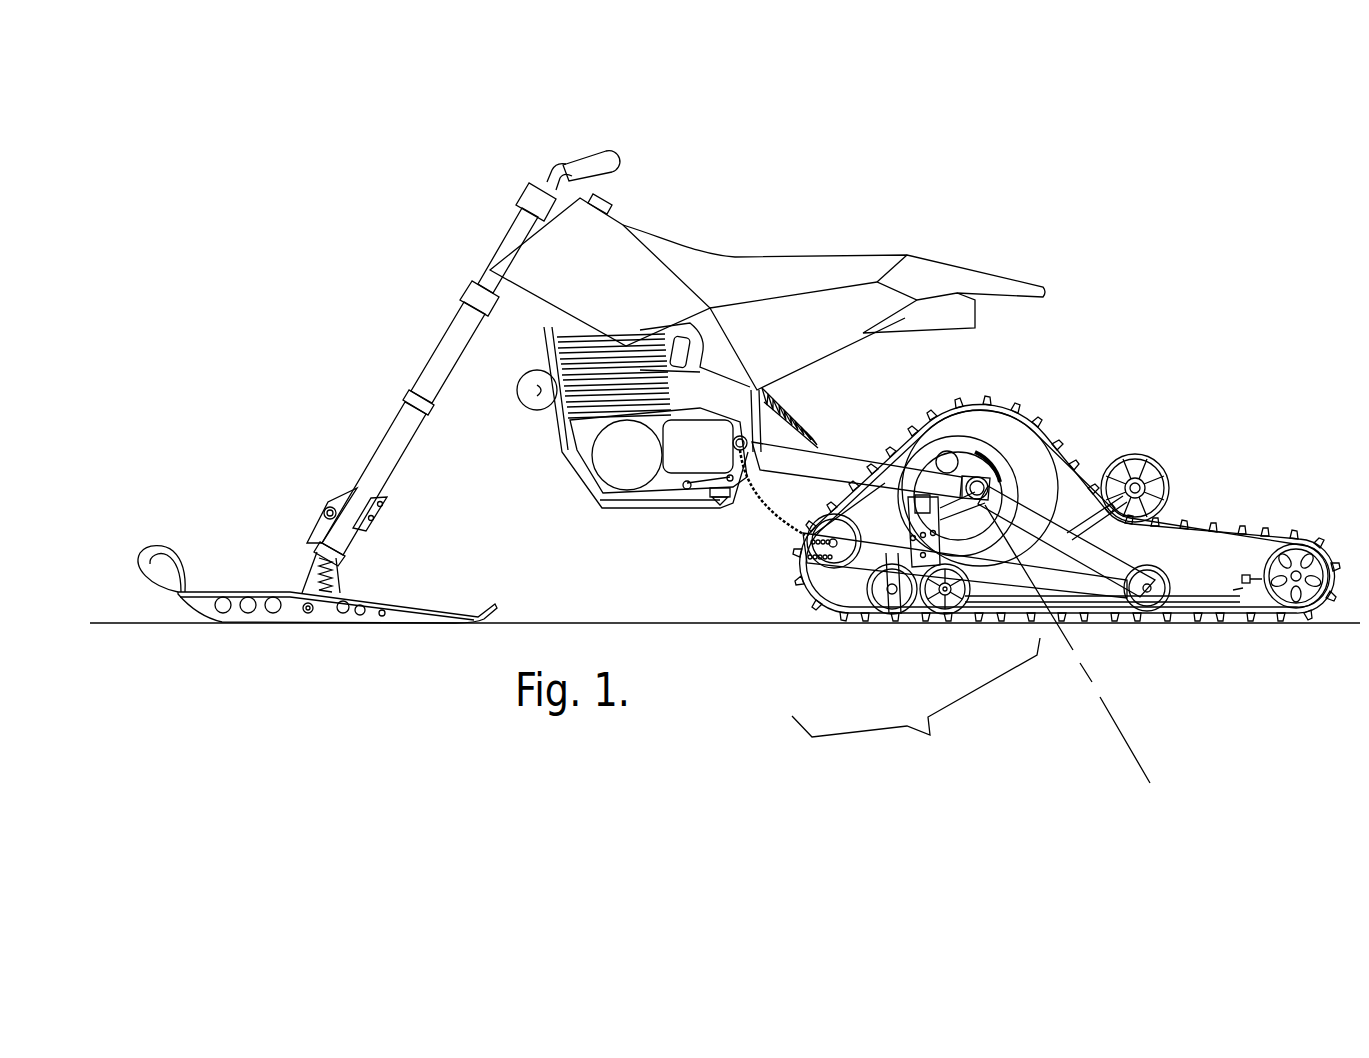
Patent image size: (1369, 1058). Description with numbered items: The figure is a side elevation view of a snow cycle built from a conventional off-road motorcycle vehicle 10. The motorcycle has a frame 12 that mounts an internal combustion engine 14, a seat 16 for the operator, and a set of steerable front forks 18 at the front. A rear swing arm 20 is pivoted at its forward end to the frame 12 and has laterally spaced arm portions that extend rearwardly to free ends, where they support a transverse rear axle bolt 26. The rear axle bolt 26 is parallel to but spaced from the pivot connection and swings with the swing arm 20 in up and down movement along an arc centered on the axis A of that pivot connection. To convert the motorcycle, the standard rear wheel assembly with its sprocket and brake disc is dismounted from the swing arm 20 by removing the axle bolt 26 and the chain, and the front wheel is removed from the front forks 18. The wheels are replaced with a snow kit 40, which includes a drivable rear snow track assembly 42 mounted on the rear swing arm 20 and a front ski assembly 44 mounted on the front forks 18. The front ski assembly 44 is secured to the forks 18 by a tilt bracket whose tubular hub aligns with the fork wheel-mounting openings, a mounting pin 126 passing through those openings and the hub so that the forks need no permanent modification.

The off-road motorcycle vehicle 10 is at (484, 212).
The frame 12 is at (656, 524).
The internal combustion engine 14 is at (603, 477).
The seat 16 is at (750, 268).
The front forks 18 is at (445, 382).
The rear swing arm 20 is at (847, 450).
The rear axle bolt 26 is at (1010, 457).
The snow kit 40 is at (951, 754).
The rear snow track assembly 42 is at (1276, 666).
The front ski assembly 44 is at (333, 656).
The mounting pin 126 is at (325, 507).
The axis A is at (1127, 733).